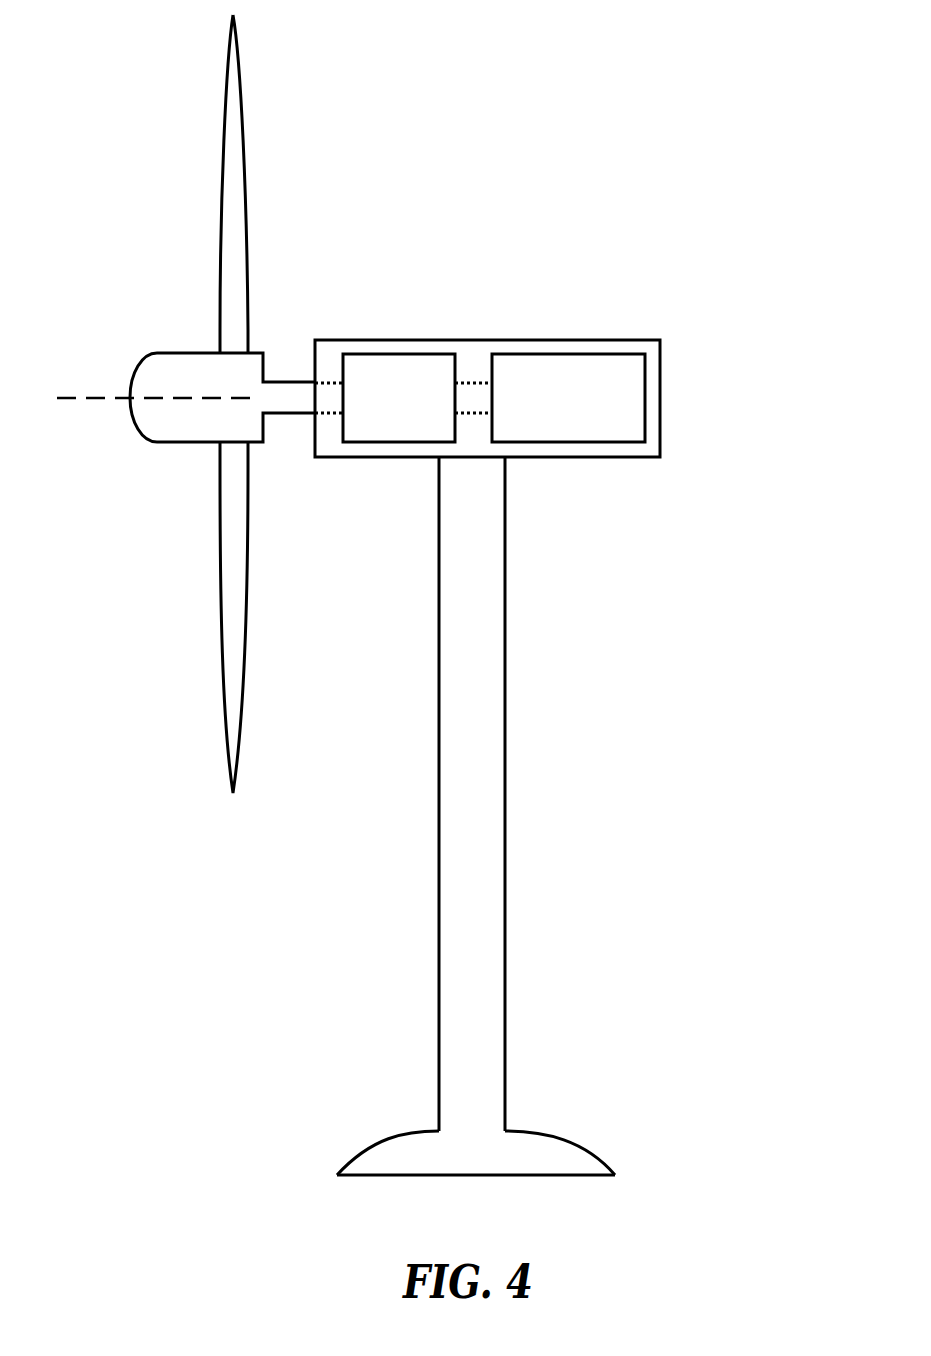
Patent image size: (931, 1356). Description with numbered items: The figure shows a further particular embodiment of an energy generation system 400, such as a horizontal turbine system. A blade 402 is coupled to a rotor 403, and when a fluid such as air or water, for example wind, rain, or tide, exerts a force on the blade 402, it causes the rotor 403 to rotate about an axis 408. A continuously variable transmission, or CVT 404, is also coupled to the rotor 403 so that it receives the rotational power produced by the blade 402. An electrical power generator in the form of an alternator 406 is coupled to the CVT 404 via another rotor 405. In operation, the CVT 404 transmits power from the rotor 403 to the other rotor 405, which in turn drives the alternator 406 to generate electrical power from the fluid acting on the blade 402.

The energy generation system 400 is at (731, 179).
The blade 402 is at (220, 282).
The rotor 403 is at (310, 382).
The continuously variable transmission (CVT) 404 is at (395, 353).
The other rotor 405 is at (485, 382).
The alternator 406 is at (572, 350).
The axis 408 is at (102, 397).